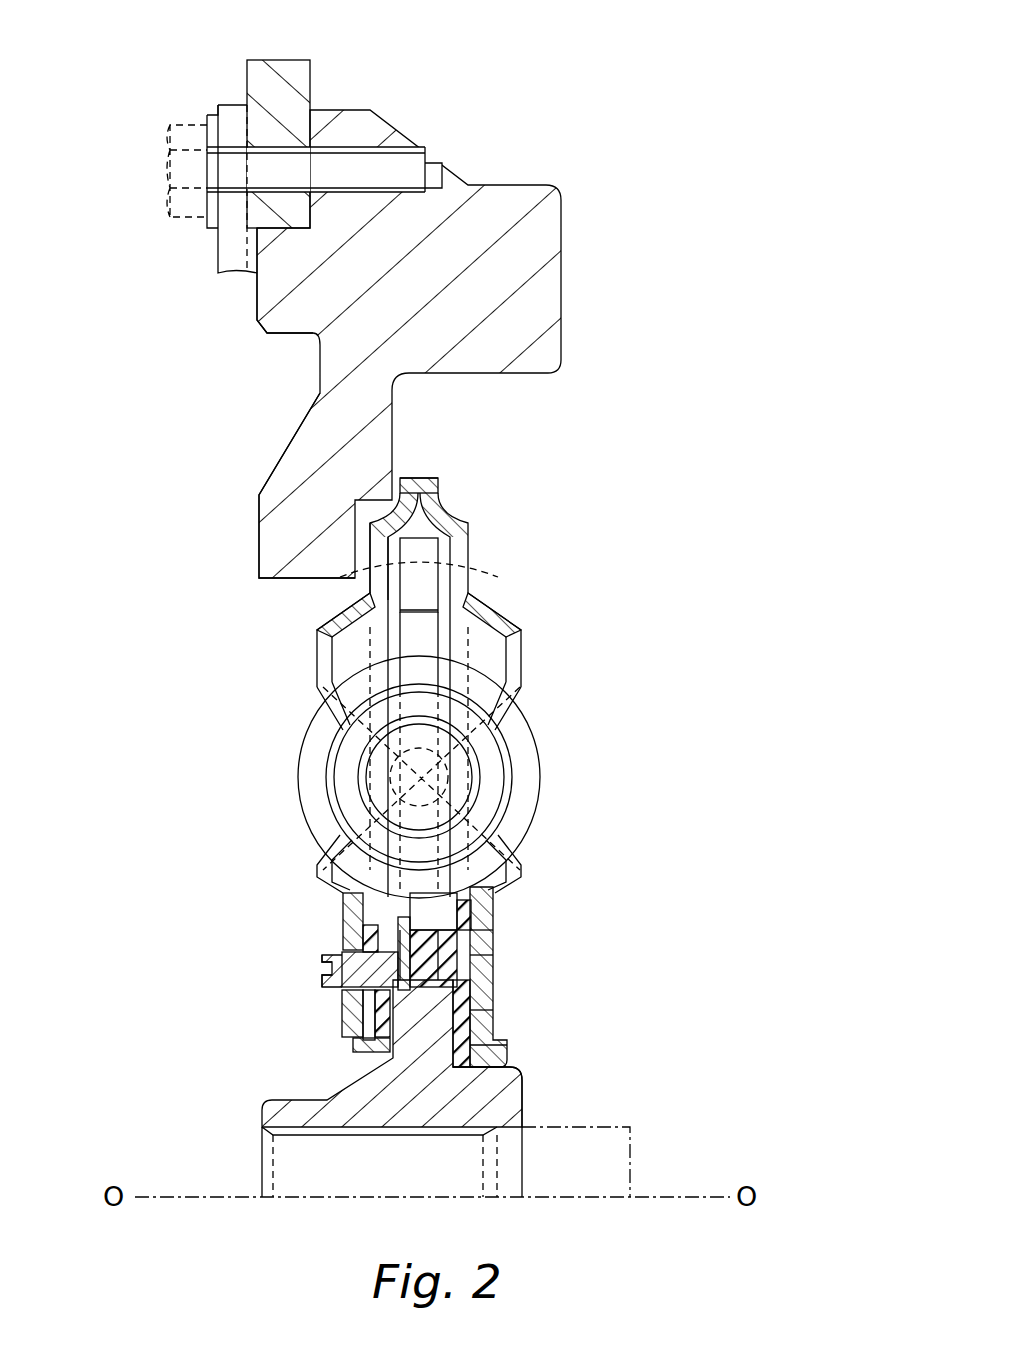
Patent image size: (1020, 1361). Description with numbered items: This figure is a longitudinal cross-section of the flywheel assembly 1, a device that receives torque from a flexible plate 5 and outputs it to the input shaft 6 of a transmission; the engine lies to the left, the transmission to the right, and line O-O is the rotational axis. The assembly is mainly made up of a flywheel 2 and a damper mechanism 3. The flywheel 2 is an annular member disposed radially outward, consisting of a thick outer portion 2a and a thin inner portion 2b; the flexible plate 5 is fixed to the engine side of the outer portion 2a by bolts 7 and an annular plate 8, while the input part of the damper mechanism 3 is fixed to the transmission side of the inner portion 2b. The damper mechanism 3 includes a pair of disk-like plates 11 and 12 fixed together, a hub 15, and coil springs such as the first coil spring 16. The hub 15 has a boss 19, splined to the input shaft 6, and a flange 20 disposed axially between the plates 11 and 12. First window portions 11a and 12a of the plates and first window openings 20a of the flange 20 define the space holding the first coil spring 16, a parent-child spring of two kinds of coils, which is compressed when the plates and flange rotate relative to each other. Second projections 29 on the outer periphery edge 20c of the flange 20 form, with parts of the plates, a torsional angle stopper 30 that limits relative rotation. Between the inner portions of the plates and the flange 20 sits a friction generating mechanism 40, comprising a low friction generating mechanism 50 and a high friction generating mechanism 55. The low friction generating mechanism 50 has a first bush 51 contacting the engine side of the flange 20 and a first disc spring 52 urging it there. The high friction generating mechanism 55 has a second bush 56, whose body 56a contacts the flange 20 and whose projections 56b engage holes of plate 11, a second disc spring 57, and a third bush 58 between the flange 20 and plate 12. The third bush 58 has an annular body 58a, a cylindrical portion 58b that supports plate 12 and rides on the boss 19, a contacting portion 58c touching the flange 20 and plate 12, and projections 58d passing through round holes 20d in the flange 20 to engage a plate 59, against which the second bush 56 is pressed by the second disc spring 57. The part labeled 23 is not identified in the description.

The flywheel assembly 1 is at (590, 84).
The flywheel 2 is at (591, 243).
The outer portion 2a is at (298, 293).
The inner portion 2b is at (302, 477).
The damper mechanism 3 is at (610, 720).
The flexible plate 5 is at (216, 257).
The input shaft 6 is at (628, 1160).
The bolts 7 is at (187, 172).
The annular plate 8 is at (288, 98).
The disk-like plate 11 is at (322, 903).
The first window portion 11a is at (300, 700).
The disk-like plate 12 is at (505, 908).
The first window portion 12a is at (540, 683).
The hub 15 is at (548, 1085).
The first coil spring 16 is at (523, 782).
The boss 19 is at (430, 1107).
The flange 20 is at (455, 560).
The first window openings 20a is at (420, 632).
The outer periphery edge 20c is at (340, 578).
The holes 20d is at (460, 980).
The stud cap 23 is at (428, 550).
The second projections 29 is at (443, 540).
The torsional angle stopper 30 is at (397, 543).
The friction generating mechanism 40 is at (322, 985).
The low friction generating mechanism 50 is at (353, 1048).
The first bush 51 is at (377, 1050).
The first disc spring 52 is at (345, 1015).
The high friction generating mechanism 55 is at (343, 893).
The second bush 56 is at (325, 953).
The body 56a is at (322, 962).
The projections 56b is at (330, 982).
The second disc spring 57 is at (503, 452).
The third bush 58 is at (490, 968).
The body 58a is at (495, 1010).
The cylindrical portion 58b is at (490, 1045).
The contacting portion 58c is at (495, 945).
The projections 58d is at (495, 955).
The plate 59 is at (500, 905).